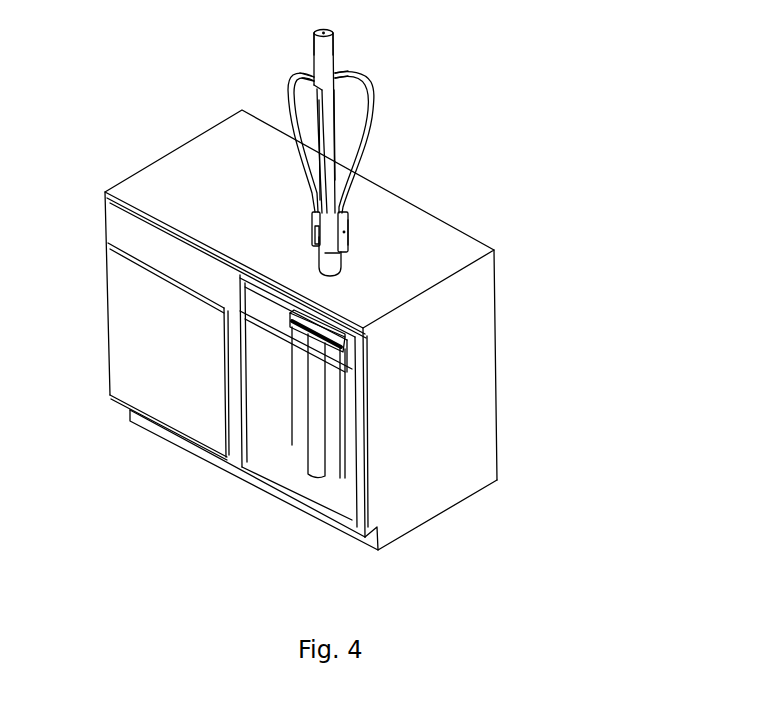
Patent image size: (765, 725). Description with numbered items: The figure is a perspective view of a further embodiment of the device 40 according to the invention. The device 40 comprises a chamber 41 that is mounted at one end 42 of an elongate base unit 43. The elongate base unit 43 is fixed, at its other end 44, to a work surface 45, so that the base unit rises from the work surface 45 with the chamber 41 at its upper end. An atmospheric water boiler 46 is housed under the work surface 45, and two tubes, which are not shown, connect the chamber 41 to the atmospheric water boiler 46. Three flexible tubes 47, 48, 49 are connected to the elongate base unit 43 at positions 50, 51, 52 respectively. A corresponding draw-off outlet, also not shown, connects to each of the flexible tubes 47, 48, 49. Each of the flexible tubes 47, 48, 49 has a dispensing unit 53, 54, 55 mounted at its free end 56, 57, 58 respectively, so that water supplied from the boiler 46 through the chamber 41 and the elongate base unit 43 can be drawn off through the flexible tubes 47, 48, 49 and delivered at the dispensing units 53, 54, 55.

The device 40 is at (503, 98).
The chamber 41 is at (329, 47).
The one end of the elongate base unit 42 is at (320, 55).
The elongate base unit 43 is at (317, 87).
The other end of the elongate base unit 44 is at (333, 275).
The work surface 45 is at (438, 260).
The atmospheric water boiler 46 is at (322, 445).
The flexible tube 47 is at (372, 93).
The flexible tube 48 is at (296, 84).
The flexible tube 49 is at (320, 148).
The connection position 50 is at (342, 70).
The connection position 51 is at (317, 70).
The connection position 52 is at (327, 135).
The dispensing unit 53 is at (353, 215).
The dispensing unit 54 is at (316, 242).
The dispensing unit 55 is at (325, 253).
The free end of flexible tube 56 is at (346, 208).
The free end of flexible tube 57 is at (316, 209).
The free end of flexible tube 58 is at (320, 255).